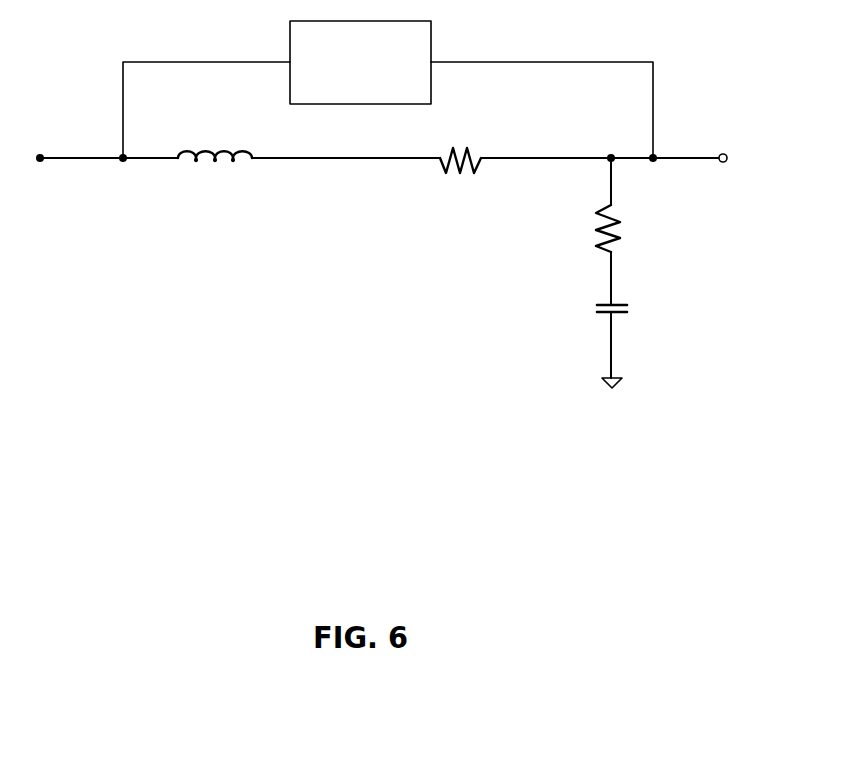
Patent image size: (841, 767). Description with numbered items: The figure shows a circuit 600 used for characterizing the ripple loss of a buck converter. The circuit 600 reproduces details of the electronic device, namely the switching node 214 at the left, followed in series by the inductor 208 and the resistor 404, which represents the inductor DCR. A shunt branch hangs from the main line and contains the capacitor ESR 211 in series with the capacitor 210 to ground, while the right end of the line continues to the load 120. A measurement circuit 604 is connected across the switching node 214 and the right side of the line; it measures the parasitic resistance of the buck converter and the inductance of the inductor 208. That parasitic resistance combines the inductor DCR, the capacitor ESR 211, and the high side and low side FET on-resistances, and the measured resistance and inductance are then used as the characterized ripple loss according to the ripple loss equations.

The circuit 600 is at (655, 530).
The measurement circuit 604 is at (344, 82).
The switching node 214 is at (56, 175).
The inductor 208 is at (238, 175).
The resistor 404 is at (477, 191).
The capacitor ESR 211 is at (635, 252).
The capacitor 210 is at (599, 324).
The load 120 is at (757, 175).